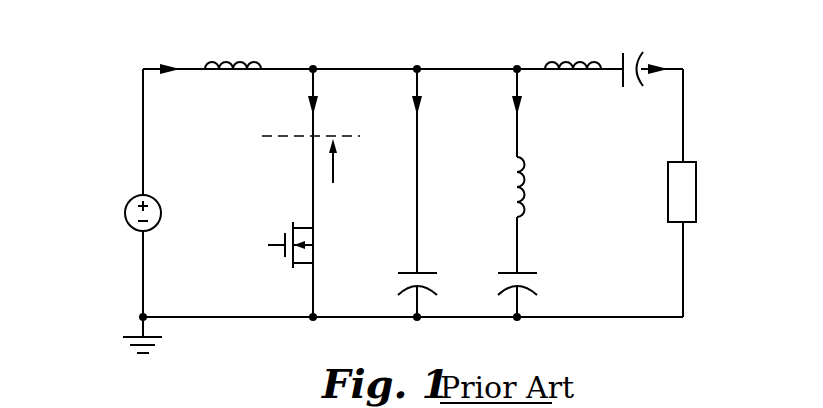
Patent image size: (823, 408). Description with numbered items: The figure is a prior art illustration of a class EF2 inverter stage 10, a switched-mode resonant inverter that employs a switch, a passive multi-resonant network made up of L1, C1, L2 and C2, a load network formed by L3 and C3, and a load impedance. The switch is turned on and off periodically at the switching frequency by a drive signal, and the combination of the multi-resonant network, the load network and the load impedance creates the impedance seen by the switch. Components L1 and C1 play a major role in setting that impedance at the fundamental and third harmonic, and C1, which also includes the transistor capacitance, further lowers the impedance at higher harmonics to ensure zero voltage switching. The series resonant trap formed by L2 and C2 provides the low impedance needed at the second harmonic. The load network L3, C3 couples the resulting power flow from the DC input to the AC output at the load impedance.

The class EF2 inverter stage 10 is at (320, 33).
The inductor L1 is at (233, 51).
The inductor L2 is at (503, 187).
The inductor L3 is at (573, 51).
The capacitor C1 is at (401, 289).
The capacitor C2 is at (535, 289).
The capacitor C3 is at (633, 85).